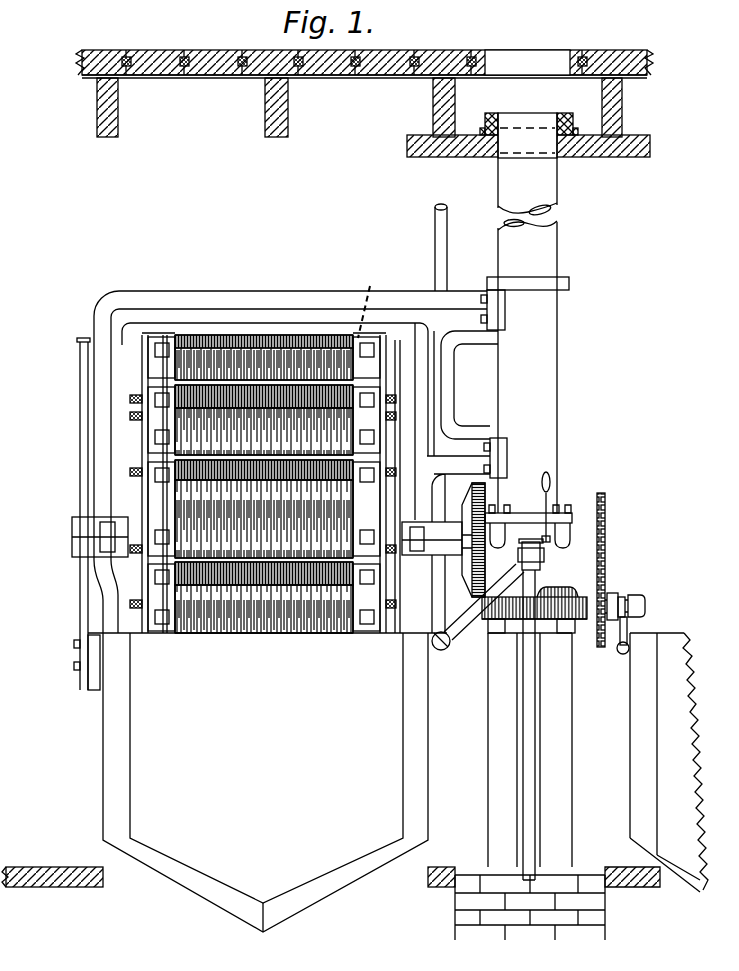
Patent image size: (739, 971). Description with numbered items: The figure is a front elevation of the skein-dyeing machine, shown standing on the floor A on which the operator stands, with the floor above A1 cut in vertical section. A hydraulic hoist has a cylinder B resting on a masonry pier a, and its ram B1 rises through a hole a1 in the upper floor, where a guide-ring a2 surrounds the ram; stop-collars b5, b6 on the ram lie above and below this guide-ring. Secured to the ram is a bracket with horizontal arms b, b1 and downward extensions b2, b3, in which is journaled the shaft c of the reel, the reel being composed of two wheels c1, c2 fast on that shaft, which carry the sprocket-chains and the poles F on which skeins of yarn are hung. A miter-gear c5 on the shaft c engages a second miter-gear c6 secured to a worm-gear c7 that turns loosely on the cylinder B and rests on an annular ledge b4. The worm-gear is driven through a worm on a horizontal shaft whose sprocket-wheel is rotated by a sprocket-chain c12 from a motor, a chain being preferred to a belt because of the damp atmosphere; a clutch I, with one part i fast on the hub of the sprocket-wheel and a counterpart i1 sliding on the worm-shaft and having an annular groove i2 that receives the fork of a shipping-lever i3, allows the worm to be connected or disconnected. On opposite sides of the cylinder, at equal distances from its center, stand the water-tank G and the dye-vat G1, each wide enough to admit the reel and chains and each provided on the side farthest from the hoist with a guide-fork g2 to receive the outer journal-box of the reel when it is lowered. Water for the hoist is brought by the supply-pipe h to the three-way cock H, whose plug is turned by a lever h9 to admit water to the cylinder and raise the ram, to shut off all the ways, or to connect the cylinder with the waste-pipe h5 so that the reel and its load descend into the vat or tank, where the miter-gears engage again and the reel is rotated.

The floor above A1 is at (364, 83).
The hole a1 is at (527, 62).
The guide-ring a2 is at (570, 132).
The stop-collar b5 is at (560, 118).
The ram B1 is at (527, 313).
The stop-collar b6 is at (569, 285).
The supply-pipe h is at (434, 242).
The horizontal arm of bracket b1 is at (265, 291).
The downward extension of bracket b2 is at (93, 447).
The guide-fork g2 is at (78, 393).
The pole F is at (367, 300).
The shaft of reel c is at (400, 530).
The wheel of reel c1 is at (130, 398).
The wheel of reel c2 is at (398, 385).
The downward extension of bracket b3 is at (443, 393).
The horizontal arm of bracket b is at (460, 456).
The miter-gear c5 is at (488, 512).
The cylinder B is at (572, 718).
The three-way cock H is at (536, 563).
The lever h9 is at (552, 483).
The waste-pipe h5 is at (527, 758).
The miter-gear c6 is at (566, 590).
The annular ledge b4 is at (505, 633).
The worm-gear c7 is at (578, 633).
The sprocket-chain c12 is at (606, 509).
The clutch I is at (612, 593).
The clutch part i is at (608, 594).
The annular groove i2 is at (626, 596).
The clutch counterpart i1 is at (643, 595).
The shipping-lever i3 is at (630, 625).
The dye-vat G1 is at (267, 782).
The water-tank G is at (688, 745).
The floor A is at (331, 864).
The pier a is at (530, 915).